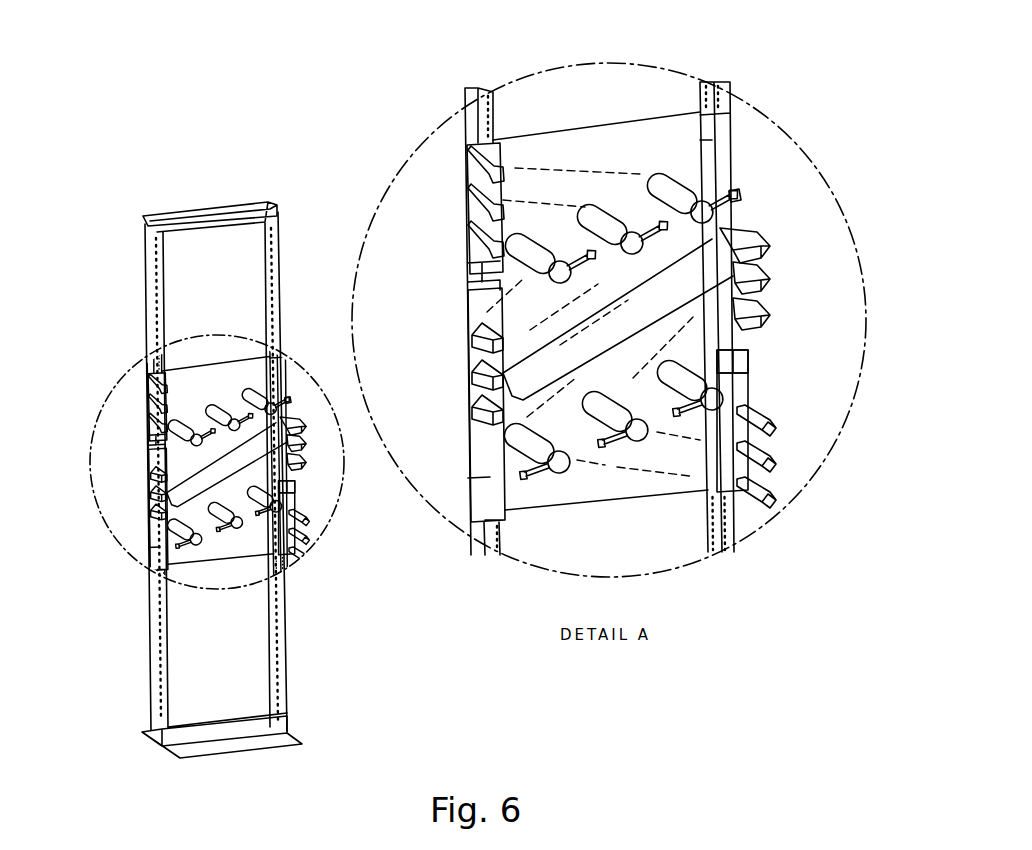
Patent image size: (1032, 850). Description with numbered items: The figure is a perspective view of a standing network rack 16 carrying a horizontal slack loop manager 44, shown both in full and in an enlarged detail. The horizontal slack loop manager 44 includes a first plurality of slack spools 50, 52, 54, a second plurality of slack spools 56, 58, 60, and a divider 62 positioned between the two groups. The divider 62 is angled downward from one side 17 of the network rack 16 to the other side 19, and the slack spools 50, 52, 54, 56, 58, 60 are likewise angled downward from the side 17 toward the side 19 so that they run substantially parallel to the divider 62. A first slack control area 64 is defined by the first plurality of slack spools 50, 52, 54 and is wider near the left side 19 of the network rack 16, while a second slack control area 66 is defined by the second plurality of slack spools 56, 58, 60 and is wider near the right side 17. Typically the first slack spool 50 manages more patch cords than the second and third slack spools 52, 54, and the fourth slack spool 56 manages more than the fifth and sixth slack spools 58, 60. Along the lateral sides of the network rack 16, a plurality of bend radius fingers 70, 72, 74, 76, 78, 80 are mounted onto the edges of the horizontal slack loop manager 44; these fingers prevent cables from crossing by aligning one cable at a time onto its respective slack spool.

The network rack 16 is at (215, 206).
The one side of network rack 17 is at (283, 306).
The other side of network rack 19 is at (148, 300).
The horizontal slack loop manager 44 is at (328, 533).
The first slack spool 50 is at (468, 278).
The second slack spool 52 is at (605, 208).
The third slack spool 54 is at (733, 170).
The fourth slack spool 56 is at (736, 370).
The fifth slack spool 58 is at (627, 442).
The sixth slack spool 60 is at (517, 450).
The divider 62 is at (739, 221).
The first slack control area 64 is at (566, 150).
The second slack control area 66 is at (580, 485).
The bend radius finger 70 is at (467, 245).
The bend radius finger 72 is at (467, 212).
The bend radius finger 74 is at (463, 178).
The bend radius finger 76 is at (751, 248).
The bend radius finger 78 is at (762, 290).
The bend radius finger 80 is at (762, 335).